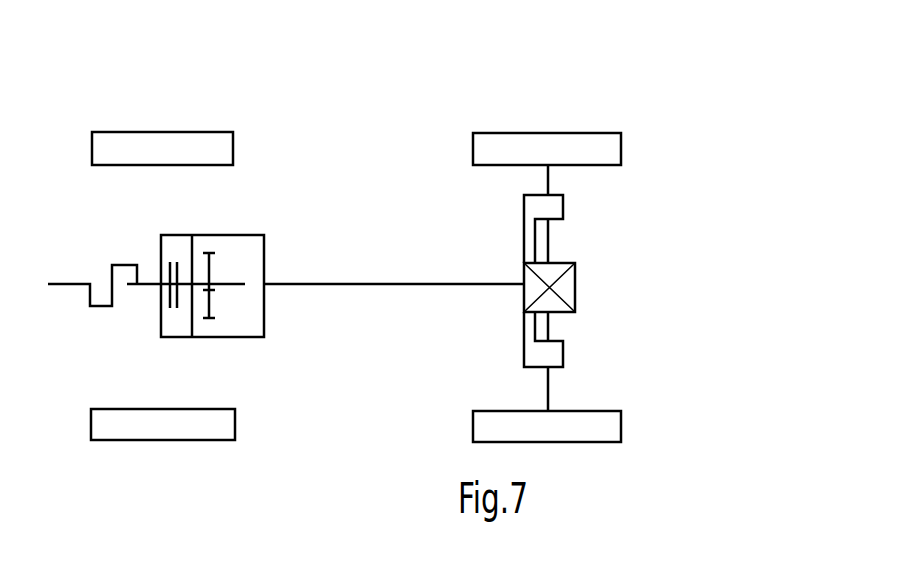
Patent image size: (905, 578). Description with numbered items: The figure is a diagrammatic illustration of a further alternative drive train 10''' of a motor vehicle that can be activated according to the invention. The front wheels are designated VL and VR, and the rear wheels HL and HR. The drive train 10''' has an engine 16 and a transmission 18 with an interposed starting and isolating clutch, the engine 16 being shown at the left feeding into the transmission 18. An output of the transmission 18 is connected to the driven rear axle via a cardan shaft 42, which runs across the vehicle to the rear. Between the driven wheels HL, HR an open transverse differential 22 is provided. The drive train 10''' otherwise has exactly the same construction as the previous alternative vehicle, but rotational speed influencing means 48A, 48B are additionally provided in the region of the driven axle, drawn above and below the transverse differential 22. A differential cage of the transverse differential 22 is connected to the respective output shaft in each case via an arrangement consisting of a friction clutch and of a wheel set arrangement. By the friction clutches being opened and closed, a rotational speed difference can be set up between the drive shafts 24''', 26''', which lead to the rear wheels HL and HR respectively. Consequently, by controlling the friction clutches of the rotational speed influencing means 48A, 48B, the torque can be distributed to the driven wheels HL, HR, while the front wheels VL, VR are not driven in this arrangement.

The drive train 10''' is at (401, 183).
The engine 16 is at (102, 306).
The transmission 18 is at (232, 235).
The cardan shaft 42 is at (353, 285).
The open transverse differential 22 is at (565, 290).
The rotational speed influencing means 48A is at (563, 207).
The rotational speed influencing means 48B is at (563, 352).
The drive shaft 26''' is at (478, 214).
The drive shaft 24''' is at (497, 361).
The front right wheel VR is at (195, 145).
The front left wheel VL is at (165, 428).
The rear right wheel HR is at (600, 145).
The rear left wheel HL is at (573, 427).